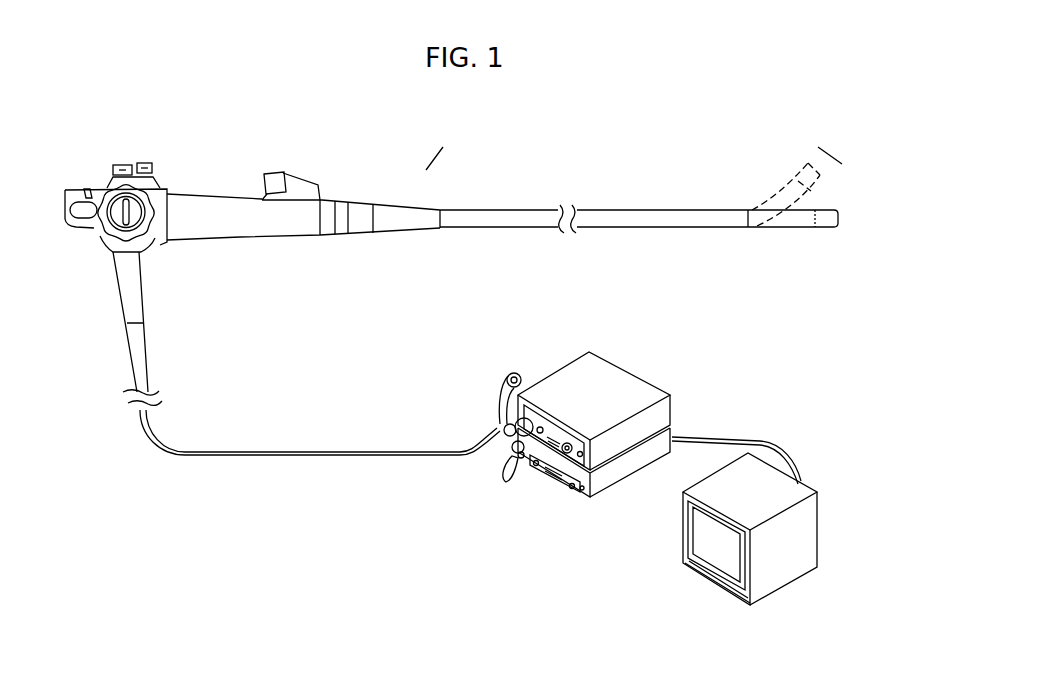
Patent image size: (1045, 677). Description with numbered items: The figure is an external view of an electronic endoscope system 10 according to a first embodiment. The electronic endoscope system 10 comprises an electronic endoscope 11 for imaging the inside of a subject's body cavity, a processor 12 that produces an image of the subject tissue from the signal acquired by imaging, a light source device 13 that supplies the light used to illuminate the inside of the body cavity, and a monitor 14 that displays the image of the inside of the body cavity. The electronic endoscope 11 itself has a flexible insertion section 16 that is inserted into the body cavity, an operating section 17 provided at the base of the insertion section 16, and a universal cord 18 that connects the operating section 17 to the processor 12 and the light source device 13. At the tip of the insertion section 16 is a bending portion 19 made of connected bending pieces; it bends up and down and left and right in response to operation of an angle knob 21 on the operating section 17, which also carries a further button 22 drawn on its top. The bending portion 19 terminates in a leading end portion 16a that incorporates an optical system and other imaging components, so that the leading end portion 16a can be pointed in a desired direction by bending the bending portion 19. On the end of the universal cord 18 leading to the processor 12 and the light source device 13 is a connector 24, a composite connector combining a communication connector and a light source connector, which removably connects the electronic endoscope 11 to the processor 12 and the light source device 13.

The electronic endoscope system 10 is at (759, 90).
The electronic endoscope 11 is at (358, 245).
The processor 12 is at (603, 495).
The light source device 13 is at (622, 378).
The monitor 14 is at (712, 566).
The flexible insertion section 16 is at (636, 147).
The leading end portion 16a is at (829, 228).
The operating section 17 is at (248, 238).
The universal cord 18 is at (142, 346).
The bending portion 19 is at (780, 228).
The angle knob 21 is at (128, 175).
The operation button 22 is at (264, 183).
The connector 24 is at (483, 440).